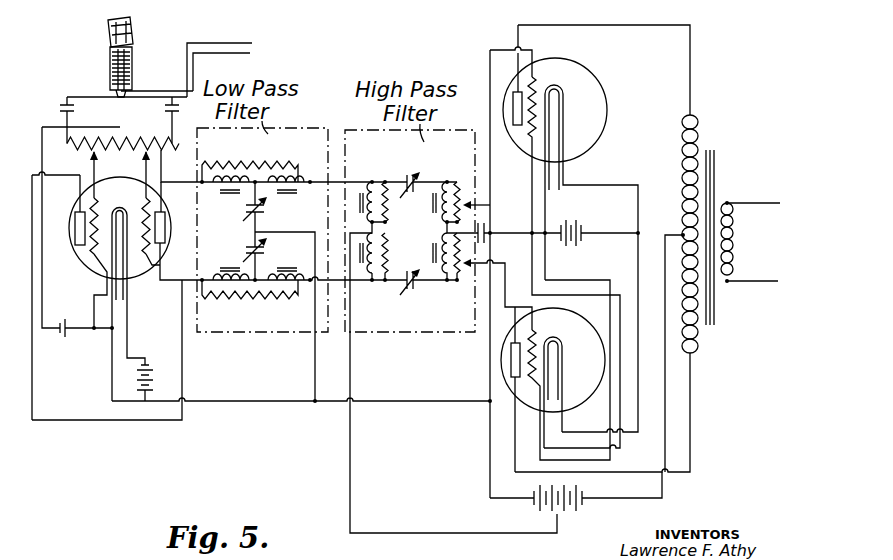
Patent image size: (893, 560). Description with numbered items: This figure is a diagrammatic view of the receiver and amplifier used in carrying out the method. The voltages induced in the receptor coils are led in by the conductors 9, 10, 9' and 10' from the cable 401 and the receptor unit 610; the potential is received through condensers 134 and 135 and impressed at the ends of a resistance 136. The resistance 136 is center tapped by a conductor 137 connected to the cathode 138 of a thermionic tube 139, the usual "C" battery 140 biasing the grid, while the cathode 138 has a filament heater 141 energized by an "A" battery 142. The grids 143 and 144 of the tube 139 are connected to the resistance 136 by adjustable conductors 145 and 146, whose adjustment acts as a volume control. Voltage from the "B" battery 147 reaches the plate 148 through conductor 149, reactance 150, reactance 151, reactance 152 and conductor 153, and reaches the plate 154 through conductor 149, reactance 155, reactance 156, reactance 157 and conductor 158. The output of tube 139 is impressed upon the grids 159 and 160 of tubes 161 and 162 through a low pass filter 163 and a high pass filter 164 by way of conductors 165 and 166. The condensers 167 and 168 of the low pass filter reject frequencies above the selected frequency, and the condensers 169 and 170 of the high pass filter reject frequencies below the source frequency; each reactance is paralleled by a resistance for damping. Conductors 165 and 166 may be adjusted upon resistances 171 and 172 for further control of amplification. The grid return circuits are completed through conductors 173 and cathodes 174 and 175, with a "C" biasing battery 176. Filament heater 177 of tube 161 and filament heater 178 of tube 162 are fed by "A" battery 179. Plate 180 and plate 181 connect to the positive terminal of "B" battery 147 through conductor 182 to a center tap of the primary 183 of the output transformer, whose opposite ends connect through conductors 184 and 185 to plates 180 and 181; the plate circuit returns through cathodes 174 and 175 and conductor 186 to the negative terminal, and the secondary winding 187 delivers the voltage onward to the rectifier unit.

The conductor 9 is at (127, 83).
The conductor 9' is at (219, 59).
The conductor 10 is at (154, 106).
The conductor 10' is at (221, 72).
The cable 401 is at (133, 36).
The detector housing 610 is at (133, 66).
The condenser 134 is at (75, 108).
The condenser 135 is at (176, 112).
The resistance 136 is at (181, 166).
The conductor 137 is at (121, 127).
The cathode 138 is at (104, 280).
The thermionic tube 139 is at (125, 290).
The "C" battery 140 is at (66, 340).
The filament heater 141 is at (129, 264).
The "A" battery 142 is at (143, 363).
The grid 143 is at (100, 204).
The grid 144 is at (156, 259).
The adjustable conductor 145 is at (92, 167).
The adjustable conductor 146 is at (144, 167).
The "B" battery 147 is at (587, 497).
The plate 148 is at (164, 241).
The conductor 149 is at (351, 358).
The reactance 150 is at (372, 183).
The reactance 151 is at (289, 193).
The reactance 152 is at (216, 188).
The conductor 153 is at (175, 191).
The plate 154 is at (78, 233).
The reactance 155 is at (375, 284).
The reactance 156 is at (295, 300).
The reactance 157 is at (214, 270).
The conductor 158 is at (75, 419).
The grid 159 is at (535, 85).
The grid 160 is at (530, 385).
The tube 161 is at (611, 100).
The tube 162 is at (568, 311).
The low pass filter 163 is at (250, 333).
The high pass filter 164 is at (401, 333).
The conductor 165 is at (490, 166).
The conductor 166 is at (508, 262).
The condenser 167 is at (265, 215).
The condenser 168 is at (265, 250).
The condenser 169 is at (413, 199).
The condenser 170 is at (412, 270).
The resistance 171 is at (458, 182).
The resistance 172 is at (458, 284).
The conductor 173 is at (525, 240).
The cathode 174 is at (486, 201).
The cathode 175 is at (551, 340).
The "C" biasing battery 176 is at (480, 222).
The filament heater 177 is at (561, 123).
The filament heater 178 is at (561, 375).
The "A" battery 179 is at (584, 226).
The plate 180 is at (514, 95).
The plate 181 is at (511, 360).
The conductor 182 is at (665, 441).
The primary winding 183 is at (697, 350).
The conductor 184 is at (691, 91).
The conductor 185 is at (690, 446).
The conductor 186 is at (490, 352).
The secondary winding 187 is at (734, 235).